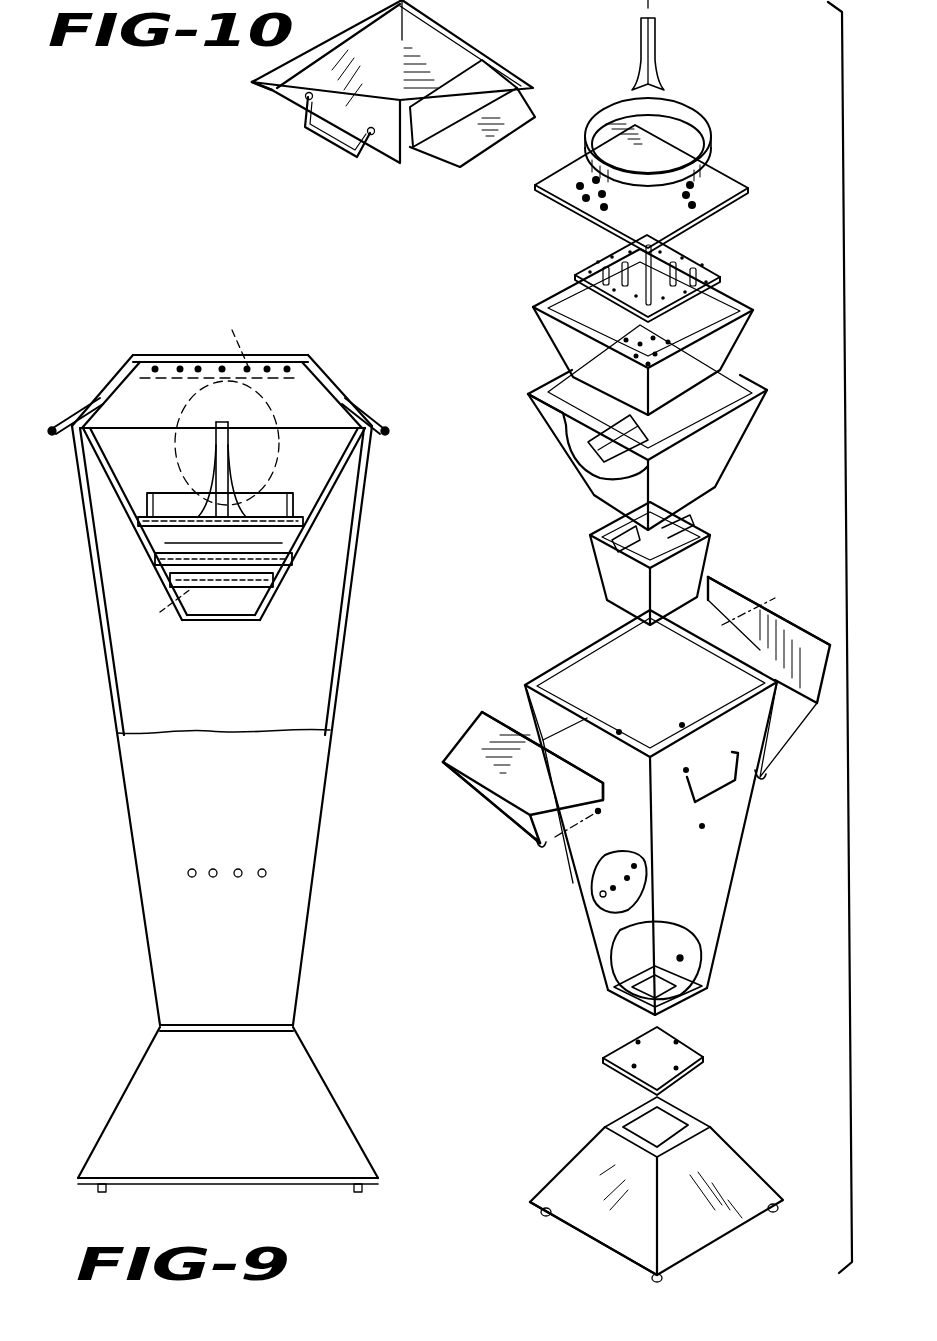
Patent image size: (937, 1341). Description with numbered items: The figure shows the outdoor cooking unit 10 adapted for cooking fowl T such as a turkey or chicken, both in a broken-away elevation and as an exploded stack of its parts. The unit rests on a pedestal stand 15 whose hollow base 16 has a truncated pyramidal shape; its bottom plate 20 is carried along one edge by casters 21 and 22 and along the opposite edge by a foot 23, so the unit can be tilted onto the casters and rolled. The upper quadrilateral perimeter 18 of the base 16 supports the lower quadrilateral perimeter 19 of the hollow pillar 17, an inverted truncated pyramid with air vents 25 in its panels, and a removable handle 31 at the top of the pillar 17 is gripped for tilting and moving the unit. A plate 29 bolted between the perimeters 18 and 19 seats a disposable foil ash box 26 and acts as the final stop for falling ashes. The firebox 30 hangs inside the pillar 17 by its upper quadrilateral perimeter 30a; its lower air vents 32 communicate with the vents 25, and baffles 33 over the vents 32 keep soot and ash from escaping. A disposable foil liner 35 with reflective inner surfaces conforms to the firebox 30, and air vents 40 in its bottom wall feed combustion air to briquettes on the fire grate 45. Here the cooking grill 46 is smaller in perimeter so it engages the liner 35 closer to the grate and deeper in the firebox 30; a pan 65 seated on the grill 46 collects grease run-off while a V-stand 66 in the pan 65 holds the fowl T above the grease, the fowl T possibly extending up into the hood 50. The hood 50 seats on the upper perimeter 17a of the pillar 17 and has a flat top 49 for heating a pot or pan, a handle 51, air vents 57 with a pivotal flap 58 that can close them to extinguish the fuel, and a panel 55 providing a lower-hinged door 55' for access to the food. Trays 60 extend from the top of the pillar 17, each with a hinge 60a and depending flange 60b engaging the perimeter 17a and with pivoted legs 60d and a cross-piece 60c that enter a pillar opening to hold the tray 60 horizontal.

In FIG. 10, the outdoor cooking unit 10 is at (430, 286).
In FIG. 9, the pedestal stand 15 is at (104, 809).
In FIG. 10, the pedestal stand 15 is at (528, 1000).
In FIG. 9, the hollow base 16 is at (338, 1095).
In FIG. 10, the hollow base 16 is at (745, 1143).
In FIG. 9, the hollow pillar 17 is at (140, 907).
In FIG. 10, the hollow pillar 17 is at (746, 860).
In FIG. 10, the upper quadrilateral perimeter of the pillar 17a is at (580, 666).
In FIG. 10, the upper quadrilateral perimeter of the base 18 is at (686, 1118).
In FIG. 10, the lower quadrilateral perimeter of the pillar 19 is at (628, 956).
In FIG. 9, the bottom plate 20 is at (262, 1186).
In FIG. 10, the bottom plate 20 is at (605, 1250).
In FIG. 10, the caster 21 is at (540, 1222).
In FIG. 9, the caster 22 is at (106, 1190).
In FIG. 10, the caster 22 is at (665, 1278).
In FIG. 9, the foot 23 is at (359, 1194).
In FIG. 10, the foot 23 is at (780, 1206).
In FIG. 9, the air vents 25 is at (255, 866).
In FIG. 10, the air vents 25 is at (602, 880).
In FIG. 10, the disposable ash box 26 is at (702, 552).
In FIG. 9, the plate 29 is at (160, 1027).
In FIG. 10, the plate 29 is at (685, 1050).
In FIG. 9, the firebox 30 is at (216, 625).
In FIG. 10, the firebox 30 is at (752, 432).
In FIG. 10, the upper quadrilateral perimeter of the firebox 30a is at (746, 390).
In FIG. 10, the removable handle 31 is at (740, 782).
In FIG. 9, the air vents 32 is at (160, 615).
In FIG. 10, the air vents 32 is at (600, 478).
In FIG. 9, the baffles 33 is at (255, 585).
In FIG. 10, the baffles 33 is at (618, 440).
In FIG. 9, the foil liner 35 is at (340, 450).
In FIG. 10, the foil liner 35 is at (746, 332).
In FIG. 9, the air vents 40 is at (255, 555).
In FIG. 10, the air vents 40 is at (628, 338).
In FIG. 9, the fire grate 45 is at (290, 556).
In FIG. 10, the fire grate 45 is at (697, 258).
In FIG. 9, the cooking grill 46 is at (150, 528).
In FIG. 10, the cooking grill 46 is at (722, 178).
In FIG. 9, the flat top 49 is at (258, 356).
In FIG. 10, the flat top 49 is at (437, 30).
In FIG. 9, the hood 50 is at (140, 336).
In FIG. 10, the hood 50 is at (272, 114).
In FIG. 9, the handle 51 is at (85, 408).
In FIG. 10, the handle 51 is at (328, 146).
In FIG. 10, the panel 55 is at (488, 89).
In FIG. 10, the door flap 55' is at (472, 151).
In FIG. 9, the air vents 57 is at (198, 372).
In FIG. 9, the pivotal flap 58 is at (310, 356).
In FIG. 10, the pivotal flap 58 is at (288, 62).
In FIG. 10, the tray 60 is at (472, 732).
In FIG. 10, the hinge 60a is at (498, 712).
In FIG. 10, the depending flange 60b is at (606, 788).
In FIG. 10, the cross-piece 60c is at (520, 832).
In FIG. 10, the legs 60d is at (540, 846).
In FIG. 9, the pan 65 is at (294, 500).
In FIG. 10, the pan 65 is at (700, 112).
In FIG. 9, the V-stand 66 is at (214, 458).
In FIG. 10, the V-stand 66 is at (662, 56).
In FIG. 9, the fowl T is at (227, 403).